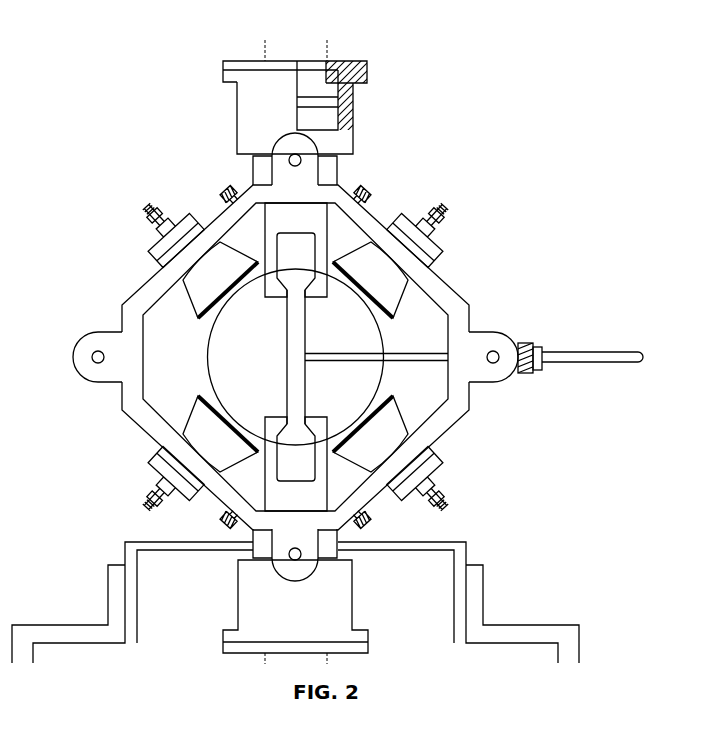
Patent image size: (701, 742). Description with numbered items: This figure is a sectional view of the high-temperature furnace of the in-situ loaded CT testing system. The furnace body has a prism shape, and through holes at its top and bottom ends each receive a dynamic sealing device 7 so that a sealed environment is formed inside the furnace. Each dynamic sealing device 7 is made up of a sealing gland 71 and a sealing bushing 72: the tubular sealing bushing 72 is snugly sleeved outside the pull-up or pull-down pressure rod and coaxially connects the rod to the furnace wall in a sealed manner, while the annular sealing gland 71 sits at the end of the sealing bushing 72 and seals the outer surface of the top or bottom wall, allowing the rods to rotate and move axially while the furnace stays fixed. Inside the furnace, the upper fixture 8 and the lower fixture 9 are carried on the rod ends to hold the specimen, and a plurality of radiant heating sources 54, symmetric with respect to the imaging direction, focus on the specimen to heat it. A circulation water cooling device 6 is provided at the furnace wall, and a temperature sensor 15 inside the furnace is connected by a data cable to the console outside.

The circulation water cooling device 6 is at (223, 527).
The dynamic sealing device 7 is at (328, 140).
The upper fixture 8 is at (285, 222).
The lower fixture 9 is at (295, 505).
The temperature sensor 15 is at (579, 357).
The radiant heating source 54 is at (208, 428).
The sealing gland 71 is at (273, 64).
The sealing bushing 72 is at (313, 118).